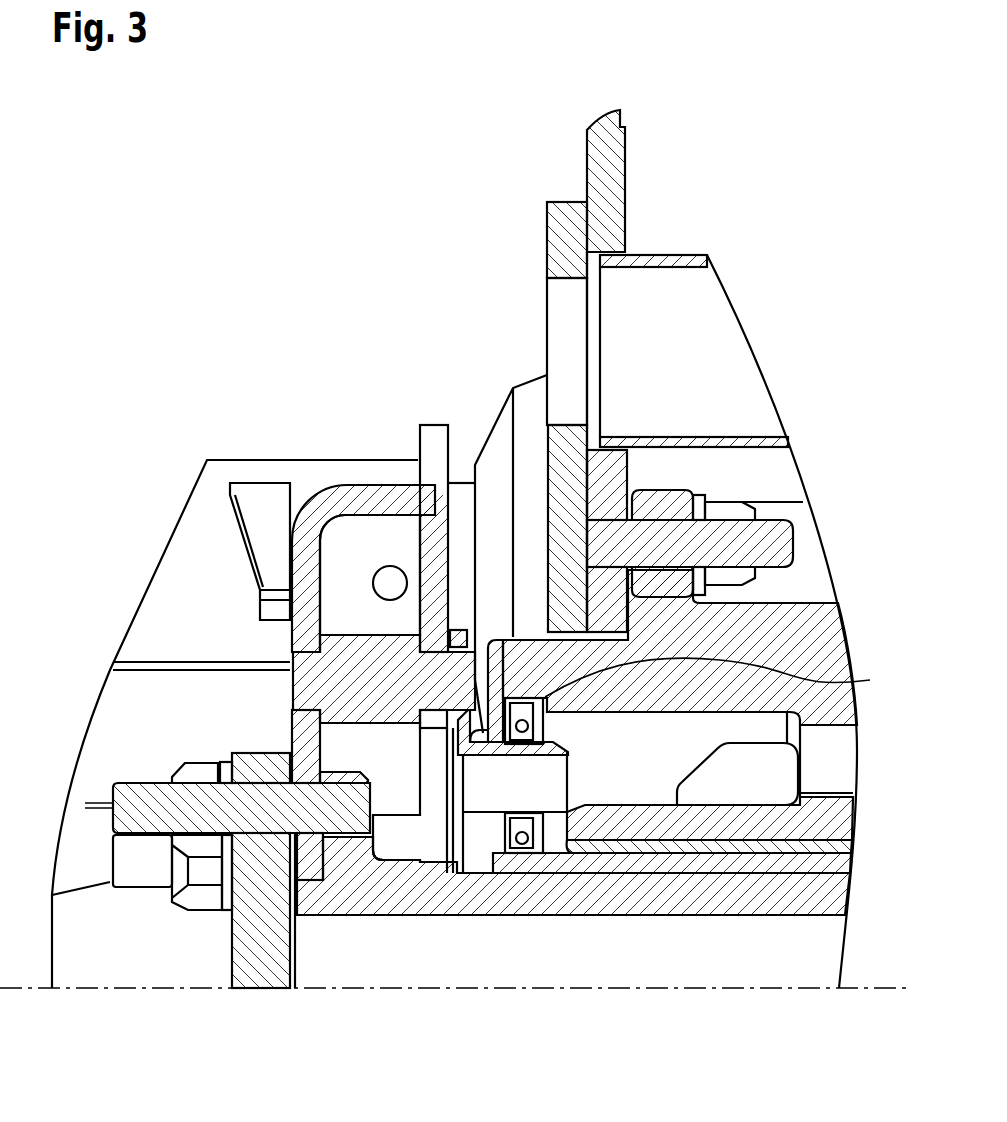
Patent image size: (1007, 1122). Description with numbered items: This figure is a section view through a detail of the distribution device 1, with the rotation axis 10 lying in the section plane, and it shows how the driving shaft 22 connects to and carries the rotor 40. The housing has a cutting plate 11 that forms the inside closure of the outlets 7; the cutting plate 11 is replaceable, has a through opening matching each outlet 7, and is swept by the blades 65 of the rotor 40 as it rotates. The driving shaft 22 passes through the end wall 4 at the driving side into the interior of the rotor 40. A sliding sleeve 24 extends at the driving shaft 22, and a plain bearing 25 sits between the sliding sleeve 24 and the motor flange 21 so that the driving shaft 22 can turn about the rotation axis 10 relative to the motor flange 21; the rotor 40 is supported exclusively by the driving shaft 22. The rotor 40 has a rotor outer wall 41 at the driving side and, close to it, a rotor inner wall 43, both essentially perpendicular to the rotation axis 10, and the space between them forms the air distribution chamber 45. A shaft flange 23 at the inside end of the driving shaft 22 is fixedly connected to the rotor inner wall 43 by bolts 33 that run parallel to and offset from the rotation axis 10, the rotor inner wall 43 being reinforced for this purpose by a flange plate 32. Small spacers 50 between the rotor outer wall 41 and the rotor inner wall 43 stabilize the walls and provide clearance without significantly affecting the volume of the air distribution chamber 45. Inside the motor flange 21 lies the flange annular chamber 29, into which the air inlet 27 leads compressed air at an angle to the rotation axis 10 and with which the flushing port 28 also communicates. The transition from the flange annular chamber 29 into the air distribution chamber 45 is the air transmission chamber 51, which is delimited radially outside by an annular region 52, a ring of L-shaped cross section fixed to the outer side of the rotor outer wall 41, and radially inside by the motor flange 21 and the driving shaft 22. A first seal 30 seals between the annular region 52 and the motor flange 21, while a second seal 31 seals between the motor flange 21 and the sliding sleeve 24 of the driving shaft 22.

The distribution device 1 is at (208, 152).
The end wall at the driving side 4 is at (613, 470).
The outlets 7 is at (703, 303).
The rotation axis 10 is at (147, 990).
The cutting plate 11 is at (567, 247).
The motor flange 21 is at (820, 637).
The driving shaft 22 is at (700, 905).
The shaft flange 23 is at (345, 777).
The sliding sleeve 24 is at (840, 862).
The plain bearing 25 is at (835, 847).
The air inlet 27 is at (752, 778).
The flushing port 28 is at (833, 743).
The flange annular chamber 29 is at (613, 764).
The first seal 30 is at (724, 678).
The second seal 31 is at (537, 847).
The flange plate 32 is at (268, 975).
The bolts 33 is at (135, 792).
The rotor 40 is at (250, 436).
The rotor outer wall at the driving side 41 is at (430, 552).
The rotor inner wall 43 is at (327, 505).
The air distribution chamber 45 is at (353, 537).
The spacers 50 is at (305, 660).
The air transmission chamber 51 is at (500, 792).
The annular region 52 is at (543, 740).
The blades 65 is at (493, 453).